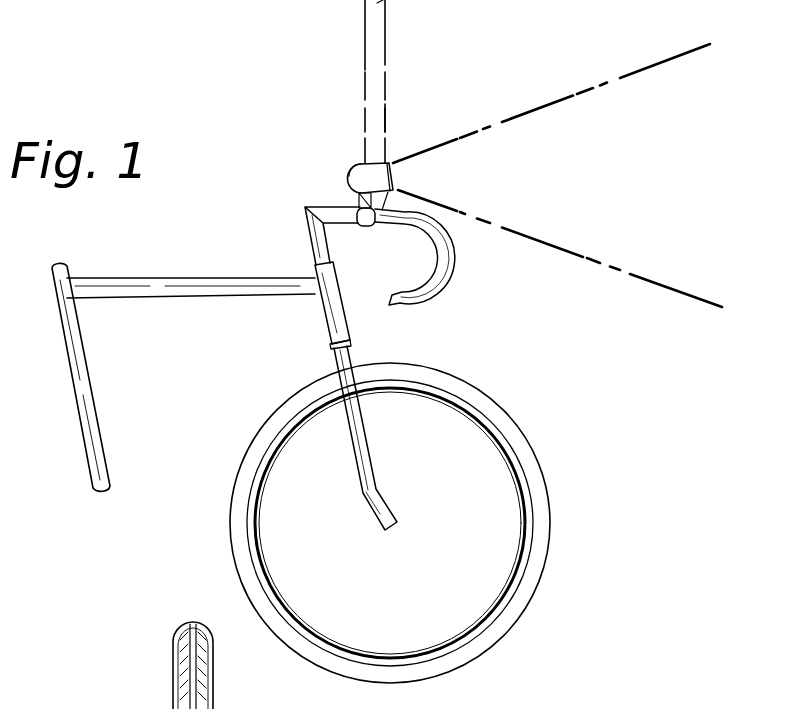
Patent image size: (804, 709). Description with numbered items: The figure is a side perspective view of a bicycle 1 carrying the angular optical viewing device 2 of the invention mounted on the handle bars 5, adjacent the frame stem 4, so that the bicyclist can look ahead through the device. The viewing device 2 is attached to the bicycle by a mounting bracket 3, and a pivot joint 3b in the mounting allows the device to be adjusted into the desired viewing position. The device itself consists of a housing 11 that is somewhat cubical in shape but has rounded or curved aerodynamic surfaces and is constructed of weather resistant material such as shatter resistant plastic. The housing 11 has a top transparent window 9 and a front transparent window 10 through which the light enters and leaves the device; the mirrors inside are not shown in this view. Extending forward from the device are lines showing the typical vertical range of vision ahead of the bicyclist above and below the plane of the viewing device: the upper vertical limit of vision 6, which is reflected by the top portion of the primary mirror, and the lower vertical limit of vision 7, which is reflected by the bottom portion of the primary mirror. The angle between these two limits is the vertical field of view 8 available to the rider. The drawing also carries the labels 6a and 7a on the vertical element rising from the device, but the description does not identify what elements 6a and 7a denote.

The bicycle 1 is at (162, 251).
The viewing device 2 is at (392, 192).
The mounting bracket 3 is at (358, 197).
The pivot joint 3b is at (392, 215).
The frame stem 4 is at (306, 226).
The handle bars 5 is at (443, 267).
The upper vertical limit of vision 6 is at (543, 104).
The pole 6a is at (388, 50).
The lower vertical limit of vision 7 is at (617, 267).
The pole lower portion 7a is at (364, 80).
The vertical field of view 8 is at (612, 113).
The top transparent window 9 is at (374, 127).
The front transparent window 10 is at (396, 172).
The housing 11 is at (353, 163).